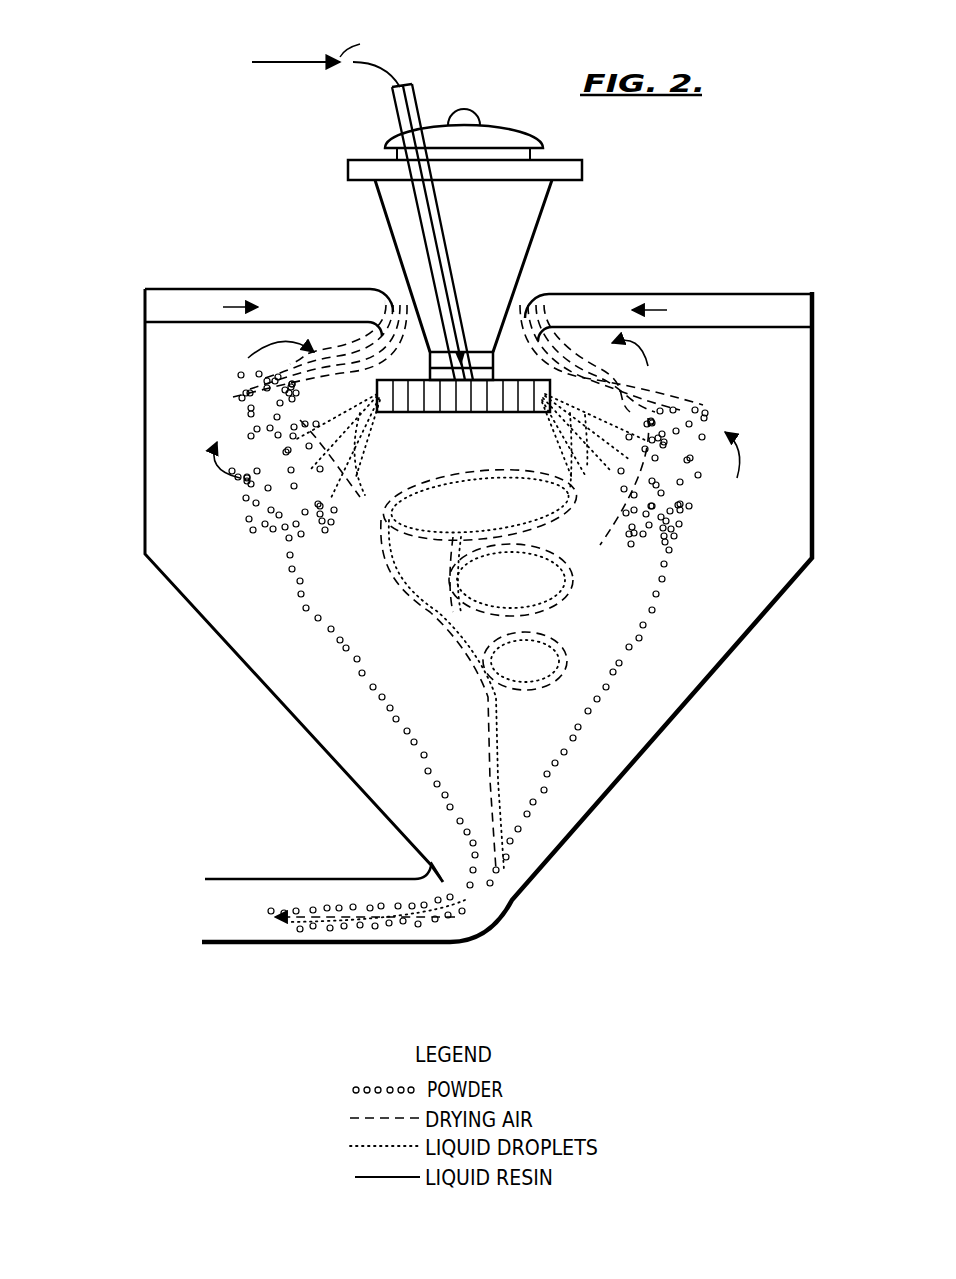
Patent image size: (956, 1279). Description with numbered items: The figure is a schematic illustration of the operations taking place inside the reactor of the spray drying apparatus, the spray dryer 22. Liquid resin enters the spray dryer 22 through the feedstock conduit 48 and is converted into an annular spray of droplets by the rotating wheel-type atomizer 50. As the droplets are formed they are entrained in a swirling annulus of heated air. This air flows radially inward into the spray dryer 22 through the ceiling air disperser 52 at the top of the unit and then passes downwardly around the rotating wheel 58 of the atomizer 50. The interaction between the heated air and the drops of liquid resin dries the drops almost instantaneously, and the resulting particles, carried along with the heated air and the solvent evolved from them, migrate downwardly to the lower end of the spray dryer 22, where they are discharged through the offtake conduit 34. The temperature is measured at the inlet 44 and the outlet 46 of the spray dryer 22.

The spray dryer 22 is at (138, 442).
The offtake conduit 34 is at (230, 879).
The inlet 44 is at (400, 297).
The outlet 46 is at (430, 870).
The feedstock conduit 48 is at (420, 220).
The rotating wheel-type atomizer 50 is at (525, 270).
The ceiling air disperser 52 is at (193, 302).
The rotating wheel 58 is at (465, 411).